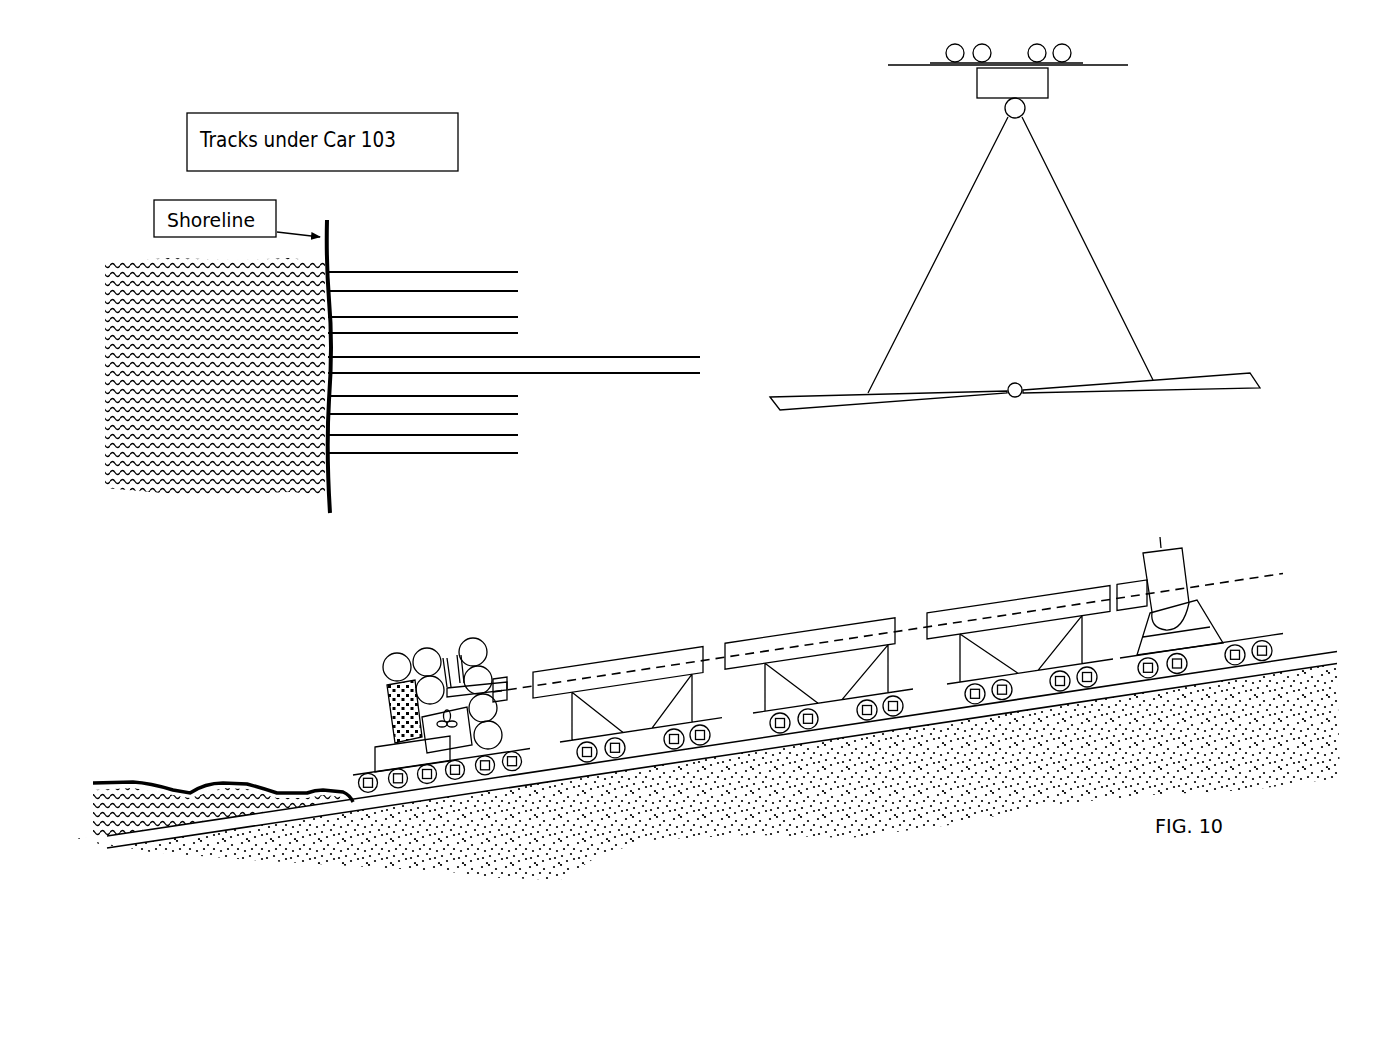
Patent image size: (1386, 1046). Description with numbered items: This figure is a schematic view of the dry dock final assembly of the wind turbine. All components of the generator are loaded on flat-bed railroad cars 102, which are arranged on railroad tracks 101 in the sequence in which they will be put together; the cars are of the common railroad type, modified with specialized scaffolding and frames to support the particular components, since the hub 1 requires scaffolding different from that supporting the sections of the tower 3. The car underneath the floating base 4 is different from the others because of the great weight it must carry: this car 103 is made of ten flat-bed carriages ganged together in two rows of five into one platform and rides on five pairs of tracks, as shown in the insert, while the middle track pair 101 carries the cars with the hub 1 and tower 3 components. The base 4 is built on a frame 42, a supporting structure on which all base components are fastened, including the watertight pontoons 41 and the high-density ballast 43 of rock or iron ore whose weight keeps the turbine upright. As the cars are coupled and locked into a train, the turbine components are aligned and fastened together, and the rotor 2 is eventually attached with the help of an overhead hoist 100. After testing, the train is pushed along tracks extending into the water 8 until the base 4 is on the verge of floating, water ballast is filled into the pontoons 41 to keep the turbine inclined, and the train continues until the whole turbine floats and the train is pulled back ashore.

The hub 1 is at (1190, 556).
The rotor 2 is at (819, 391).
The tower 3 is at (657, 646).
The floating base 4 is at (409, 695).
The water 8 is at (177, 783).
The pontoons 41 is at (478, 650).
The frame 42 is at (447, 747).
The ballast 43 is at (390, 713).
The overhead hoist 100 is at (970, 79).
The railroad tracks 101 is at (619, 350).
The flat-bed railroad cars 102 is at (832, 709).
The car 103 is at (525, 752).